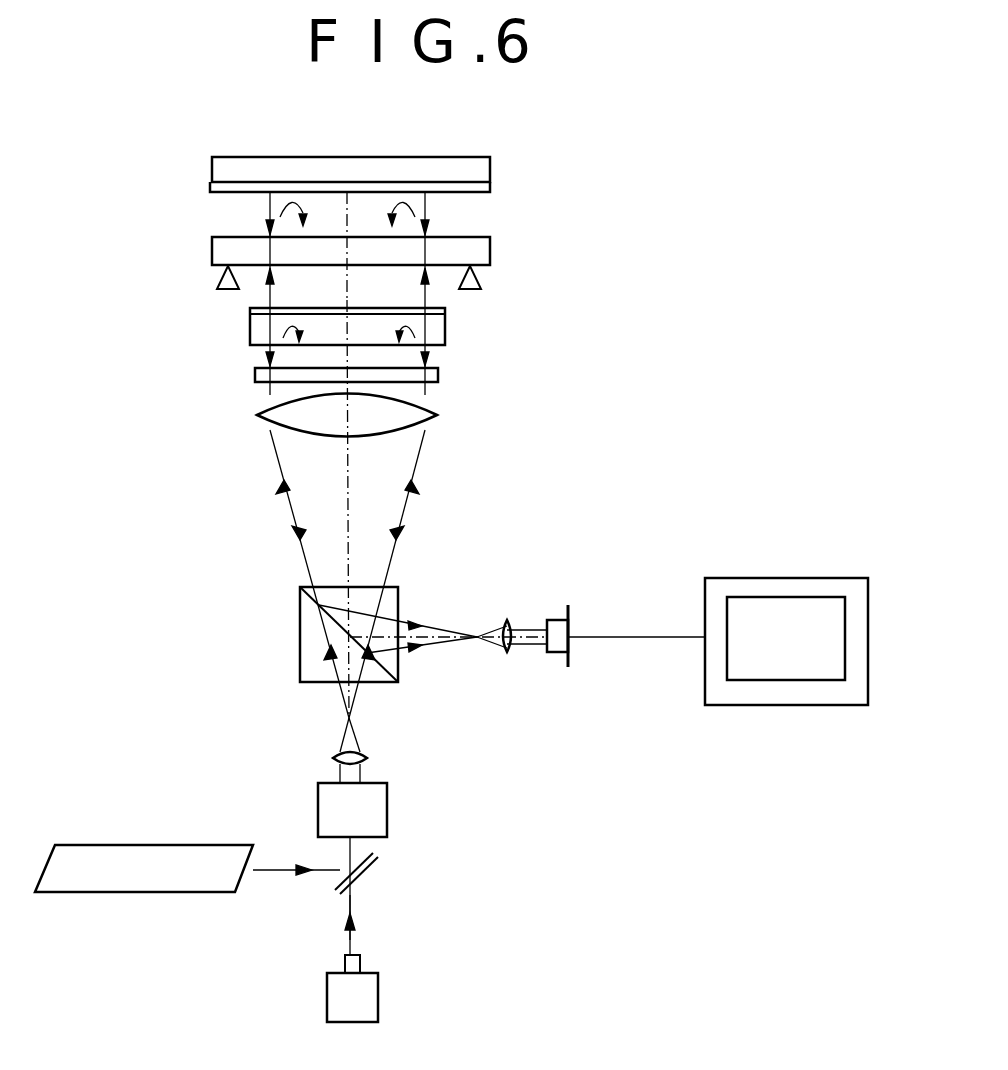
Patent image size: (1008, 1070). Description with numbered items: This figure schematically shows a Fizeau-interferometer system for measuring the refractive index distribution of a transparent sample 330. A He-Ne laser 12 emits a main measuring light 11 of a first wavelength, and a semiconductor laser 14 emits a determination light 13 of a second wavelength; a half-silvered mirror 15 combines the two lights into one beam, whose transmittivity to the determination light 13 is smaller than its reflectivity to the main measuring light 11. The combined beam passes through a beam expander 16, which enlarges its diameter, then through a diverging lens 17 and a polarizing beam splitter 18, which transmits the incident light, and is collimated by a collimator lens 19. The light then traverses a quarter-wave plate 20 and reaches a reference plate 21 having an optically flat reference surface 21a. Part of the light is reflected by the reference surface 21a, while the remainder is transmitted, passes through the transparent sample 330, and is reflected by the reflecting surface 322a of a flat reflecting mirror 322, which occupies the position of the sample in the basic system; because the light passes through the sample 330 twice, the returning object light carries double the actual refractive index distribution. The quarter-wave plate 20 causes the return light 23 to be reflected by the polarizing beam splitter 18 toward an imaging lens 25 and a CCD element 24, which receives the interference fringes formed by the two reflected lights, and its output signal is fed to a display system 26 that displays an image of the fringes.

The flat reflecting mirror 322 is at (490, 170).
The reflecting surface 322a is at (490, 192).
The transparent sample 330 is at (212, 245).
The reference plate 21 is at (445, 330).
The reference surface 21a is at (440, 304).
The quarter-wave plate 20 is at (255, 372).
The collimator lens 19 is at (425, 430).
The polarizing beam splitter 18 is at (300, 655).
The diverging lens 17 is at (333, 758).
The beam expander 16 is at (387, 800).
The main measuring light 11 is at (270, 868).
The He-Ne laser 12 is at (180, 885).
The half-silvered mirror 15 is at (378, 856).
The determination light 13 is at (352, 905).
The semiconductor laser 14 is at (378, 990).
The return light 23 is at (445, 625).
The imaging lens 25 is at (509, 655).
The CCD element 24 is at (560, 658).
The display system 26 is at (800, 578).